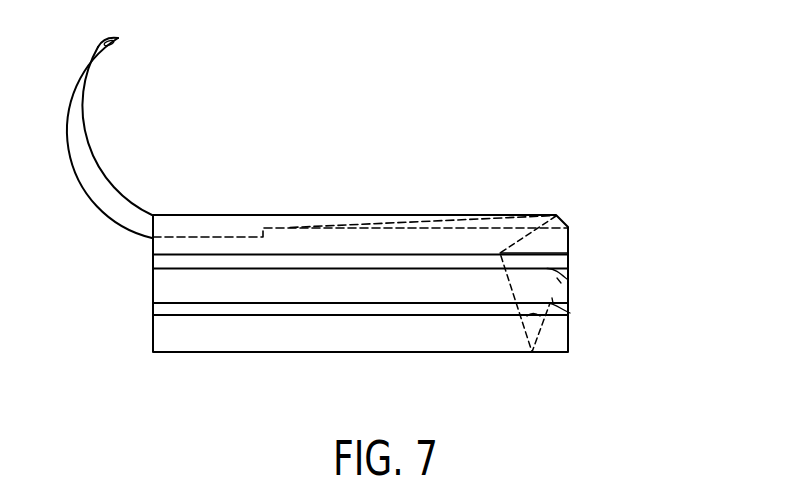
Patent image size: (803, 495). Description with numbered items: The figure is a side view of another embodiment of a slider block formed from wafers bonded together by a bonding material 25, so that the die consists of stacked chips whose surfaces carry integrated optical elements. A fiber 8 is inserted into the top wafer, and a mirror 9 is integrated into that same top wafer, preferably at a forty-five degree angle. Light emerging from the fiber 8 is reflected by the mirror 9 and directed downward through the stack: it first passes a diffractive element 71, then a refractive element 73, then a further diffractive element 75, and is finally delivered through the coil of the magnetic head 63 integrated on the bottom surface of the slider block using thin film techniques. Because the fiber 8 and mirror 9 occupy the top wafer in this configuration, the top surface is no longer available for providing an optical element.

The fiber 8 is at (88, 130).
The mirror 9 is at (562, 217).
The bonding material 25 is at (153, 257).
The diffractive element 71 is at (568, 247).
The refractive element 73 is at (568, 280).
The diffractive element 75 is at (570, 313).
The magnetic head 63 is at (547, 354).